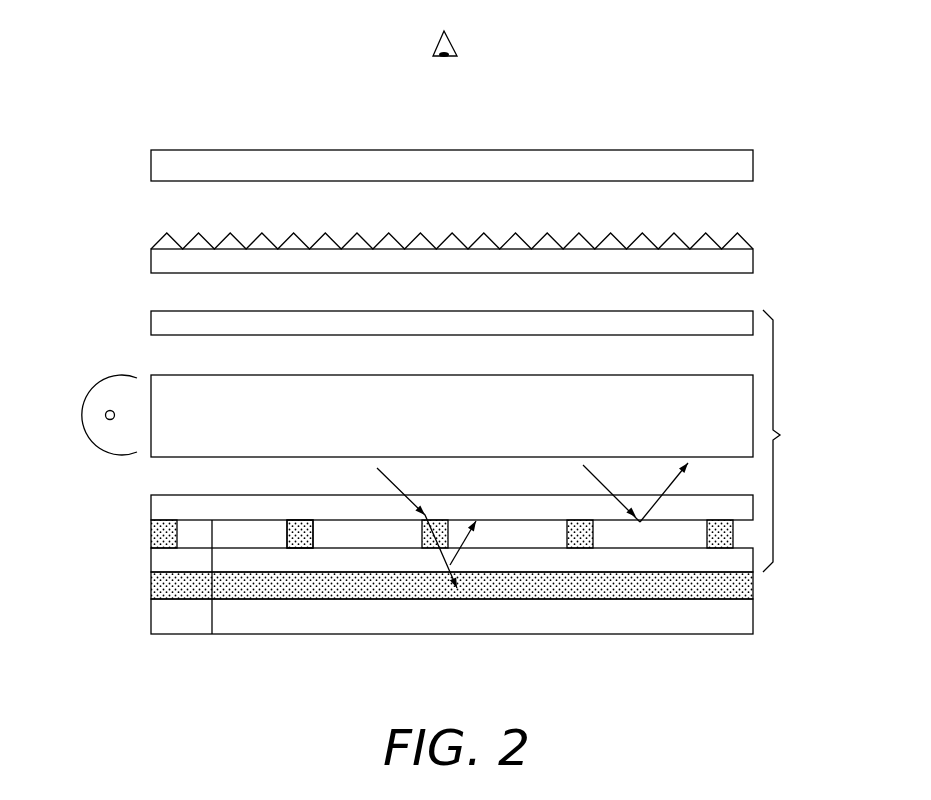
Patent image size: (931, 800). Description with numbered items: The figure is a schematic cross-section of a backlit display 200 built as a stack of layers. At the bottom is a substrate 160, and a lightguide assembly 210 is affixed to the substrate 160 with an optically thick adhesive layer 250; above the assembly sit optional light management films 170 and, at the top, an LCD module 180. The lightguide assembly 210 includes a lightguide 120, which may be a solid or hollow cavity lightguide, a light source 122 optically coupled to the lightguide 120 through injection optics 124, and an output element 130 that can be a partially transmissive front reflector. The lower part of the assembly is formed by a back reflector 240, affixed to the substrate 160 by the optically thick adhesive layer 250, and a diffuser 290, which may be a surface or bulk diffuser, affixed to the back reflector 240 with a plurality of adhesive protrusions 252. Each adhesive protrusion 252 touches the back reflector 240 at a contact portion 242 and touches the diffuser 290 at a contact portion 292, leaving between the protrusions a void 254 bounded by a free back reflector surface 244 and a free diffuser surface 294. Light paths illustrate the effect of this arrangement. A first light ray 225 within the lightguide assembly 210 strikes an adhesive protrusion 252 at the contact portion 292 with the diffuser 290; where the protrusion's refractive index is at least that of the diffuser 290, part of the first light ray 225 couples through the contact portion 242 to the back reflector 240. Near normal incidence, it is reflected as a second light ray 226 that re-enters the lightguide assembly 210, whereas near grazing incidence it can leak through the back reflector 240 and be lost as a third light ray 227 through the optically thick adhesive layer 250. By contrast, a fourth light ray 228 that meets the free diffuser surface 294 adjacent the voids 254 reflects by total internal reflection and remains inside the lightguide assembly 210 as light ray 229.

The backlit display 200 is at (172, 104).
The LCD module 180 is at (753, 166).
The light management films 170 is at (753, 265).
The output element 130 is at (150, 319).
The lightguide 120 is at (167, 383).
The light source 122 is at (106, 411).
The injection optics 124 is at (97, 432).
The lightguide assembly 210 is at (791, 441).
The diffuser 290 is at (151, 508).
The back reflector 240 is at (151, 562).
The optically thick adhesive layer 250 is at (151, 590).
The substrate 160 is at (151, 622).
The free diffuser surface 294 is at (212, 634).
The adhesive protrusions 252 is at (298, 548).
The void 254 is at (362, 537).
The contact portion 242 is at (428, 548).
The third light ray 227 is at (450, 564).
The free back reflector surface 244 is at (552, 548).
The contact portion 292 is at (298, 520).
The first light ray 225 is at (385, 474).
The second light ray 226 is at (458, 550).
The fourth light ray 228 is at (596, 478).
The light ray 229 is at (683, 480).